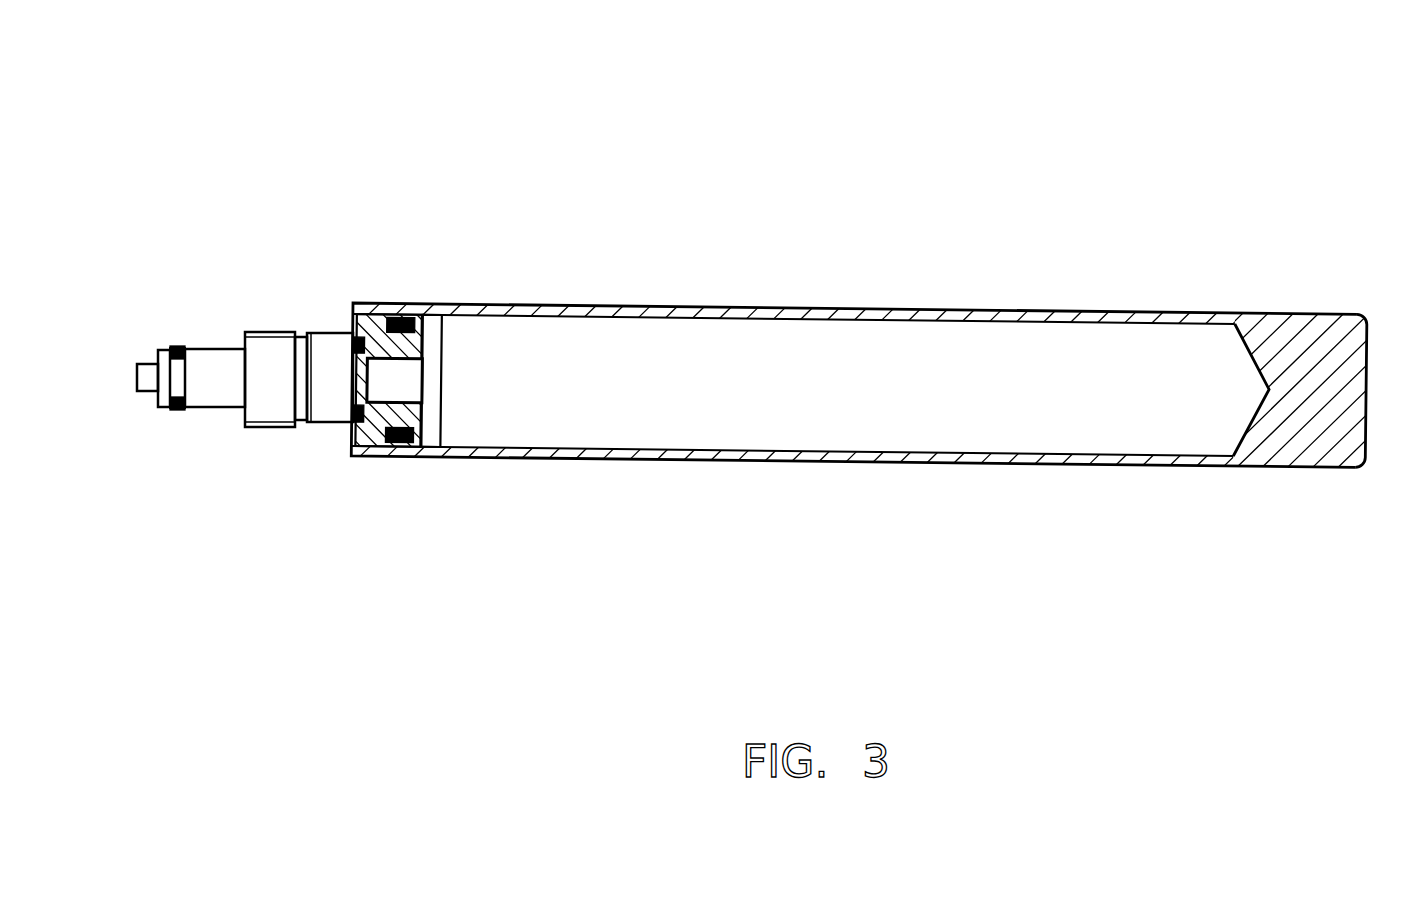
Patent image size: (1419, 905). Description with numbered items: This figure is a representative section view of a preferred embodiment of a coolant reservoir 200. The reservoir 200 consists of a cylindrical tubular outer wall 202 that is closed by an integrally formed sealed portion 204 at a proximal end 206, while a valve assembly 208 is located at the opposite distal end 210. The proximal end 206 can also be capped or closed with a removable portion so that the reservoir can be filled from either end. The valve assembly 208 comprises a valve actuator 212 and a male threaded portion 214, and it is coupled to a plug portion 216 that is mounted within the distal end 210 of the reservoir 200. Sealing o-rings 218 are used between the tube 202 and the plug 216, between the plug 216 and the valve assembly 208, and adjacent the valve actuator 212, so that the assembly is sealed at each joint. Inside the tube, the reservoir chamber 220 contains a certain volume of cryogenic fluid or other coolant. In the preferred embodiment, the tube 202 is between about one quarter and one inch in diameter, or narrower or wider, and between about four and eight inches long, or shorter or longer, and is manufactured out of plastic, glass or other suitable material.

The coolant reservoir 200 is at (750, 326).
The cylindrical tubular outer wall 202 is at (913, 310).
The sealed portion 204 is at (1330, 416).
The proximal end 206 is at (1312, 288).
The valve assembly 208 is at (329, 377).
The distal end 210 is at (792, 326).
The valve actuator 212 is at (148, 378).
The male threaded portion 214 is at (275, 374).
The plug portion 216 is at (350, 443).
The sealing o-rings 218 is at (181, 347).
The reservoir chamber 220 is at (837, 385).